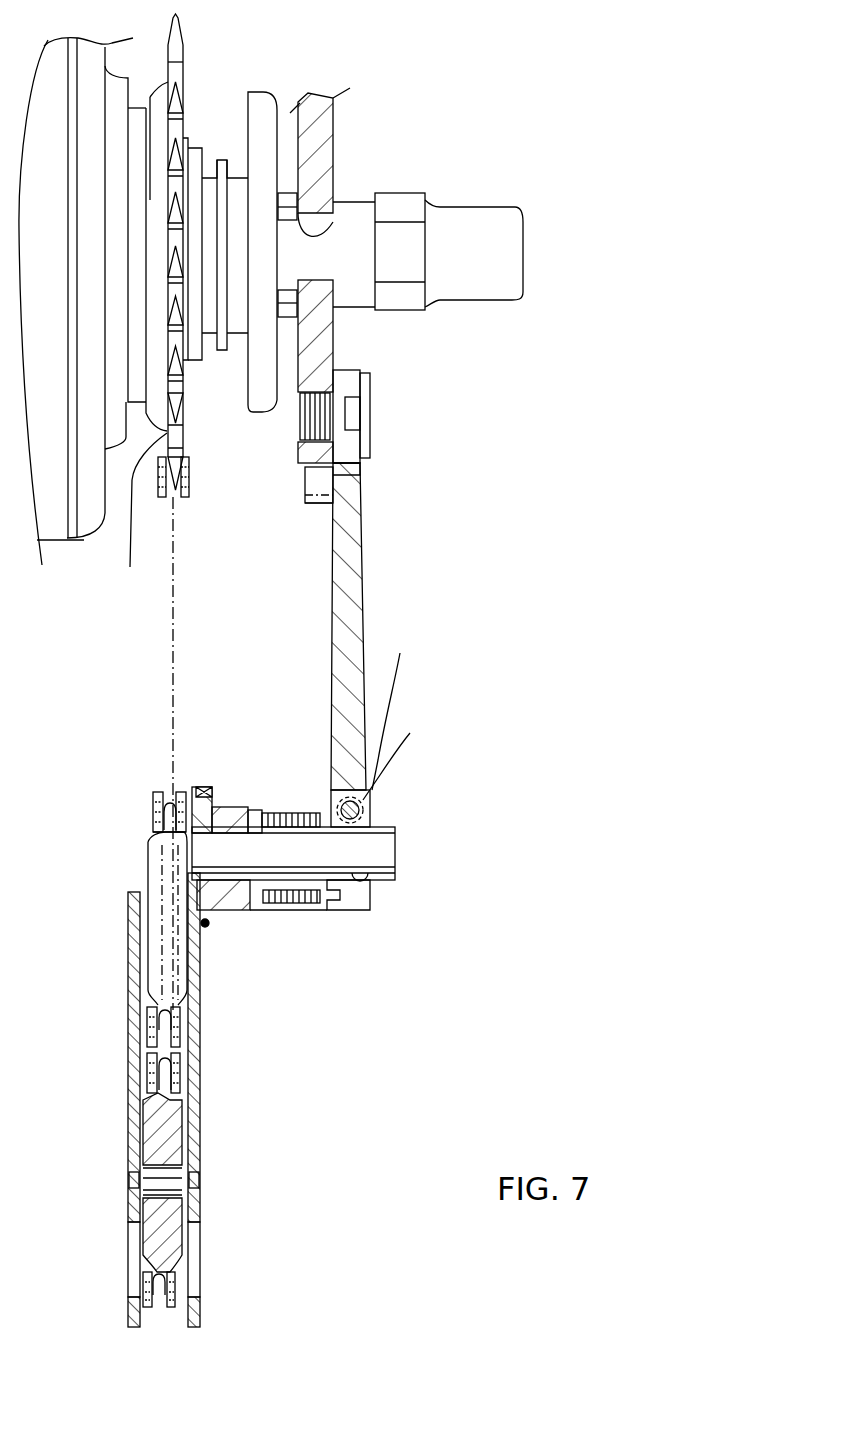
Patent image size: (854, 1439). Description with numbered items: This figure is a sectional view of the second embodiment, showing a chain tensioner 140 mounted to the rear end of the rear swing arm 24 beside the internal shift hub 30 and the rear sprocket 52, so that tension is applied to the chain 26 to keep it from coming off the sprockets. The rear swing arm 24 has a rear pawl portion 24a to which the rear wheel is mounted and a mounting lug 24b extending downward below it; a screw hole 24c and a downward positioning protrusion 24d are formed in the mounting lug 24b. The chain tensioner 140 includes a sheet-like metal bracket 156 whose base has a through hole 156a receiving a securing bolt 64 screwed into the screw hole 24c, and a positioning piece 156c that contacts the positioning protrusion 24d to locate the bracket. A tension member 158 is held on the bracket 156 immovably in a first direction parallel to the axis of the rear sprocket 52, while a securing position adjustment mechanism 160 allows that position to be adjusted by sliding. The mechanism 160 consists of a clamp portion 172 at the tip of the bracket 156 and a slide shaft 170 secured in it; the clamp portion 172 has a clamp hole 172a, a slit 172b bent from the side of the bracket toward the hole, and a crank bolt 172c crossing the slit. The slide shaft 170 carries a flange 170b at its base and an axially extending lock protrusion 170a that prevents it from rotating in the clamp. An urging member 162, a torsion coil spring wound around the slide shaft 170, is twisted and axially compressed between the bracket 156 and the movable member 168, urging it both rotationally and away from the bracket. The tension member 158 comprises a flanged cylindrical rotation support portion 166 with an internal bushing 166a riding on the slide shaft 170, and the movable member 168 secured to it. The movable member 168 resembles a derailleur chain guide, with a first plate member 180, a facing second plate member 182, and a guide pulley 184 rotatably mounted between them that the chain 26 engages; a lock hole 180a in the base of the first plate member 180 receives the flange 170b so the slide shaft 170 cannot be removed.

The rear swing arm 24 is at (365, 322).
The rear pawl portion 24a is at (333, 233).
The mounting lug 24b is at (328, 357).
The screw hole 24c is at (298, 430).
The positioning protrusion 24d is at (308, 483).
The chain 26 is at (170, 650).
The internal shift hub 30 is at (53, 532).
The rear sprocket 52 is at (137, 520).
The securing bolt 64 is at (365, 388).
The chain tensioner 140 is at (387, 719).
The bracket 156 is at (382, 616).
The through hole 156a is at (372, 443).
The positioning piece 156c is at (312, 507).
The tension member 158 is at (250, 724).
The securing position adjustment mechanism 160 is at (394, 903).
The urging member 162 is at (293, 780).
The rotation support portion 166 is at (227, 800).
The bushing 166a is at (247, 903).
The movable member 168 is at (193, 787).
The slide shaft 170 is at (354, 929).
The lock protrusion 170a is at (415, 704).
The flange 170b is at (157, 832).
The clamp portion 172 is at (383, 818).
The clamp hole 172a is at (363, 873).
The slit 172b is at (367, 802).
The crank bolt 172c is at (415, 754).
The first plate member 180 is at (183, 1100).
The lock hole 180a is at (207, 925).
The second plate member 182 is at (127, 1067).
The guide pulley 184 is at (140, 863).